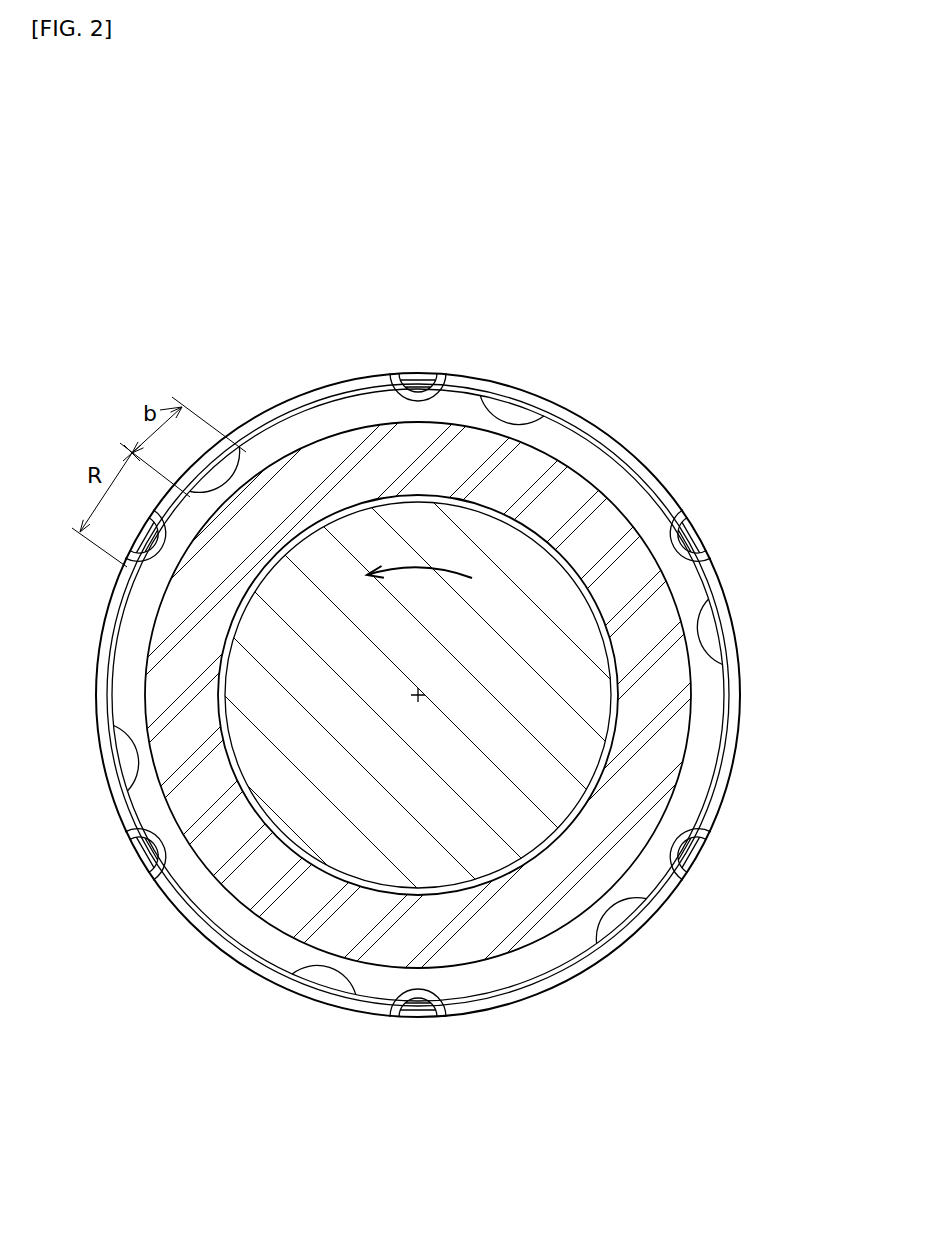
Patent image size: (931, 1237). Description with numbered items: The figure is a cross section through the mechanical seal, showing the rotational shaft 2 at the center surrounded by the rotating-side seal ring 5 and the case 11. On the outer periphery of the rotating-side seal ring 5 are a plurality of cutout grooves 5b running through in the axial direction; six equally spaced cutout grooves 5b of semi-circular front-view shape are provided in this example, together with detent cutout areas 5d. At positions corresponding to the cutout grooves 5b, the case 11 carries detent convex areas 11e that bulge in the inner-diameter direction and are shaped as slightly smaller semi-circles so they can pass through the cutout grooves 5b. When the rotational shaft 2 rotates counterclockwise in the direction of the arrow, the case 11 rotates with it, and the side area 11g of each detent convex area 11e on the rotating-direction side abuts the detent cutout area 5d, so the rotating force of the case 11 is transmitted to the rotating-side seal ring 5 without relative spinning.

The rotational shaft 2 is at (447, 681).
The rotating-side seal ring 5 is at (602, 453).
The cutout groove 5b is at (238, 464).
The detent cutout area 5d is at (211, 464).
The case 11 is at (470, 375).
The detent convex area 11e is at (416, 398).
The side area 11g is at (385, 406).